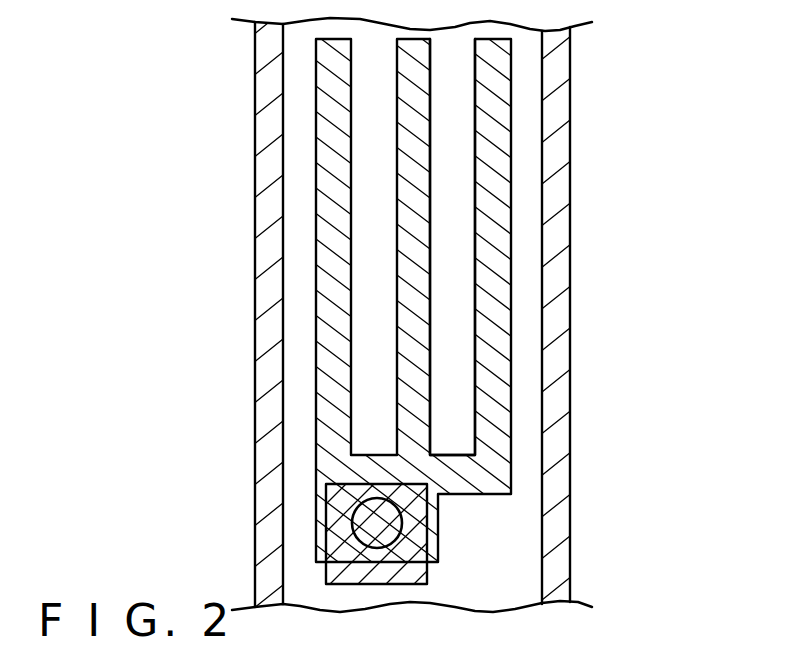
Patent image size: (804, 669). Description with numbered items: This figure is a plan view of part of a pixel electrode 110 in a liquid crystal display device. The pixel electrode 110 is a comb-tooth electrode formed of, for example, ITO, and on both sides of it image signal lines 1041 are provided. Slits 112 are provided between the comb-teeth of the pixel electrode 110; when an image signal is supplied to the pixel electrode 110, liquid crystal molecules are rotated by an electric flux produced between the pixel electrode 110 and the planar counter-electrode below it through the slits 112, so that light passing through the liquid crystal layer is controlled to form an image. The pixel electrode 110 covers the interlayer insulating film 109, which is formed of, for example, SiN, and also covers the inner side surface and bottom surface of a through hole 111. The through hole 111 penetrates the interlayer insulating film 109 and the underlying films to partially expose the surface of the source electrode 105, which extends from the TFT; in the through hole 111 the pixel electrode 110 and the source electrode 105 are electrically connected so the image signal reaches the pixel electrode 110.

The pixel electrode 110 is at (498, 112).
The image signal line 1041 is at (560, 227).
The slit 112 is at (458, 308).
The interlayer insulating film 109 is at (522, 570).
The through hole 111 is at (363, 527).
The source electrode 105 is at (337, 577).